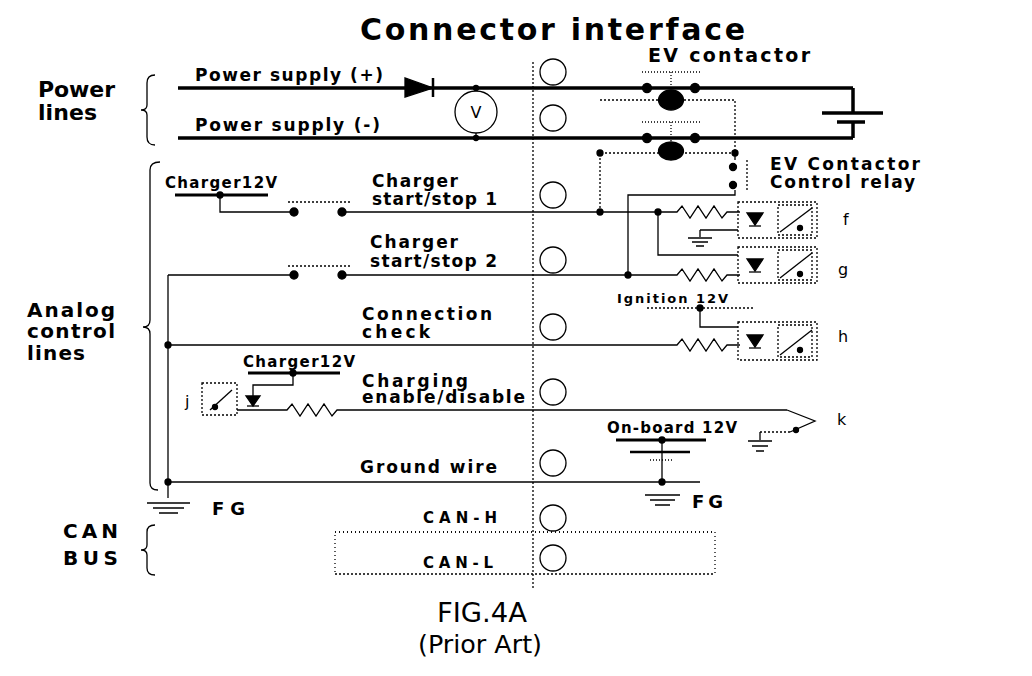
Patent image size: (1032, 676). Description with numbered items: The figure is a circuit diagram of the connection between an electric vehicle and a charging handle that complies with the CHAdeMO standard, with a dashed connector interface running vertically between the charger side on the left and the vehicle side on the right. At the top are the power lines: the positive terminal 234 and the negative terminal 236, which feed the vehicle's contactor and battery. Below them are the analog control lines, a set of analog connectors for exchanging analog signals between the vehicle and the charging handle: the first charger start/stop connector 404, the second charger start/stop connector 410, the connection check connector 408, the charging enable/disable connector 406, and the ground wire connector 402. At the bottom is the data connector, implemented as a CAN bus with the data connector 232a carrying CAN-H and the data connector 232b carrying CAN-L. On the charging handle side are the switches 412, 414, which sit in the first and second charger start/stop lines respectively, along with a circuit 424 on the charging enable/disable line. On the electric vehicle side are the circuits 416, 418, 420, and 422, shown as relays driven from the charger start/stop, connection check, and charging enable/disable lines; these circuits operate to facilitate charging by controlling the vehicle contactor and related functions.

The data connector 232a is at (565, 524).
The data connector 232b is at (542, 557).
The positive terminal 234 is at (530, 80).
The negative terminal 236 is at (567, 113).
The ground wire connector 402 is at (530, 472).
The first charger start/stop connector 404 is at (530, 207).
The charging enable/disable connector 406 is at (567, 391).
The connection check connector 408 is at (565, 324).
The second charger start/stop connector 410 is at (565, 254).
The switch 412 is at (273, 160).
The switch 414 is at (285, 243).
The circuit 416 is at (867, 230).
The circuit 418 is at (845, 282).
The circuit 420 is at (845, 348).
The circuit 422 is at (847, 440).
The circuit 424 is at (170, 397).